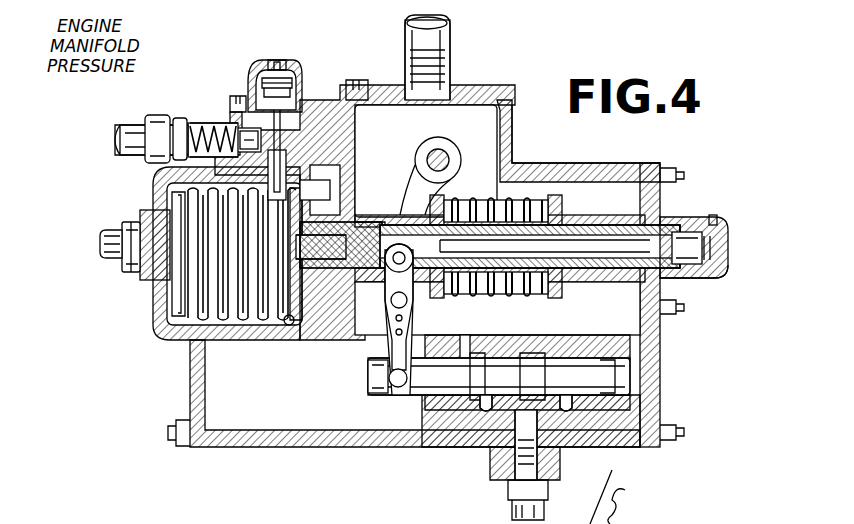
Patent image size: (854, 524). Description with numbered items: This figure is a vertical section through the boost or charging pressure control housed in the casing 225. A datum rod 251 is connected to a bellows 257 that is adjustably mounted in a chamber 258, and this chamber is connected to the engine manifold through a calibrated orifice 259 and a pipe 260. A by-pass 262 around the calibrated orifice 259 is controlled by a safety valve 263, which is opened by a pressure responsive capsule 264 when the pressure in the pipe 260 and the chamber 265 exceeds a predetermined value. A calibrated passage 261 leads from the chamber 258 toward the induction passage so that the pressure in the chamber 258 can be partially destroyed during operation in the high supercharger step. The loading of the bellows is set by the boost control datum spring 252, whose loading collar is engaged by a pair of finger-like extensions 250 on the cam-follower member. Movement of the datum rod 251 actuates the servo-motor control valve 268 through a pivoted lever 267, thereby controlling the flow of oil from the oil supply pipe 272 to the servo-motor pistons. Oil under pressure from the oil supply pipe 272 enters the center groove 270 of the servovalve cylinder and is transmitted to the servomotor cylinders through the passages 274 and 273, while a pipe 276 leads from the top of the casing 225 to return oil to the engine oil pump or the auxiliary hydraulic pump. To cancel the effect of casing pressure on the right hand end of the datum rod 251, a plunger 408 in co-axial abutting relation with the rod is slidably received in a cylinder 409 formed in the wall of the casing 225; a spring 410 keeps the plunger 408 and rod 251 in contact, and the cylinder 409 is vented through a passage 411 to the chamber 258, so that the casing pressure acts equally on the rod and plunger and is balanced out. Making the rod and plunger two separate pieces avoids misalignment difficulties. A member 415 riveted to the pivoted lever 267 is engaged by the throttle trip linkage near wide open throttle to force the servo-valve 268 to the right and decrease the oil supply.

The casing 225 is at (592, 181).
The finger-like extensions 250 is at (410, 178).
The datum rod 251 is at (362, 237).
The boost control datum spring 252 is at (493, 207).
The bellows 257 is at (178, 332).
The chamber 258 is at (240, 322).
The calibrated orifice 259 is at (199, 125).
The pipe 260 is at (112, 139).
The calibrated passage 261 is at (290, 326).
The by-pass 262 is at (285, 170).
The safety valve 263 is at (285, 142).
The pressure responsive capsule 264 is at (290, 73).
The chamber 265 is at (300, 92).
The pivoted lever 267 is at (413, 318).
The servo-motor control valve 268 is at (423, 378).
The center groove 270 is at (560, 342).
The oil supply pipe 272 is at (517, 501).
The passage 273 is at (488, 412).
The passage 274 is at (575, 412).
The pipe 276 is at (452, 36).
The plunger 408 is at (597, 226).
The cylinder 409 is at (688, 280).
The spring 410 is at (728, 242).
The passage 411 is at (716, 214).
The member 415 is at (392, 362).